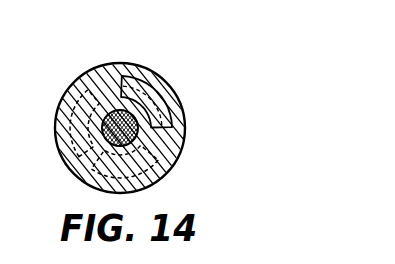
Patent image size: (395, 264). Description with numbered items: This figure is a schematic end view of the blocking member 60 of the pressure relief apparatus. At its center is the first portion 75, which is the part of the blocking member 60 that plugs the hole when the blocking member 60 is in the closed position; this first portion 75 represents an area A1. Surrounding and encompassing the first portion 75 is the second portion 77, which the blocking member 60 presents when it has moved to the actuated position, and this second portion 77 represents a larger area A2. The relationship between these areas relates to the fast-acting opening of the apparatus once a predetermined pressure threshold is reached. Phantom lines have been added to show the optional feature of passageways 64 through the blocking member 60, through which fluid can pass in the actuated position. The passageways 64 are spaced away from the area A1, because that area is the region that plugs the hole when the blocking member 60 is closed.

The blocking member 60 is at (165, 60).
The passageway 64 is at (92, 88).
The first portion 75 is at (104, 111).
The second portion 77 is at (175, 118).
The area A1 is at (139, 130).
The area A2 is at (169, 82).